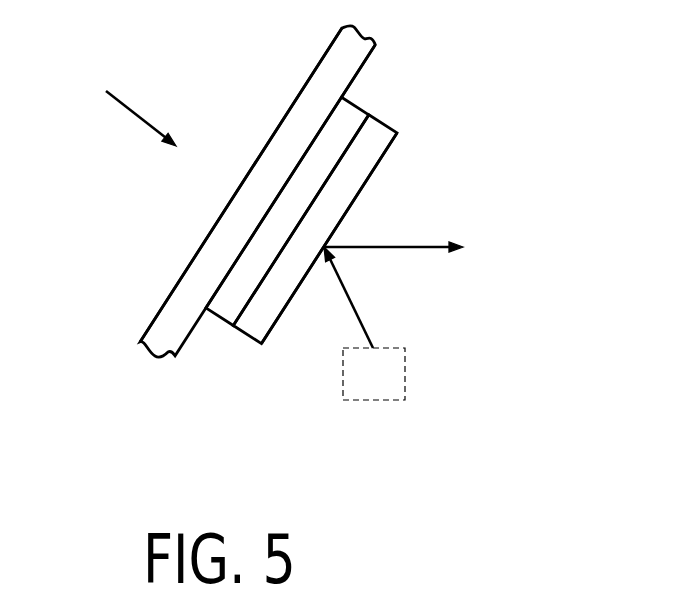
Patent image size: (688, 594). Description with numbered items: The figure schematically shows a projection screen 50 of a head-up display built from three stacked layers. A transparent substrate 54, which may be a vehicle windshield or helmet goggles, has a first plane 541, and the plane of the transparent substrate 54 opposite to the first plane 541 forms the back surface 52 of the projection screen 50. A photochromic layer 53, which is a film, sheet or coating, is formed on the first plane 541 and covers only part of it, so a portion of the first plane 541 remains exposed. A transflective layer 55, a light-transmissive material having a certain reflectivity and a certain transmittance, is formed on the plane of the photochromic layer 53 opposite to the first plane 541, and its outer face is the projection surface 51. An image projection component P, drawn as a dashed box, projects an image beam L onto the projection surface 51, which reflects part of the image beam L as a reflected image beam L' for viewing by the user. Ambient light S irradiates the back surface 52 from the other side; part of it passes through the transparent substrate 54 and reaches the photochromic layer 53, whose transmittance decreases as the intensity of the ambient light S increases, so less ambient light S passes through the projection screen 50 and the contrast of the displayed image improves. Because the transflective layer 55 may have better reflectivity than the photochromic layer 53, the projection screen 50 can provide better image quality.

The projection screen 50 is at (295, 270).
The projection surface 51 is at (328, 296).
The back surface 52 is at (144, 304).
The photochromic layer 53 is at (224, 302).
The transparent substrate 54 is at (166, 339).
The first plane 541 is at (357, 73).
The transflective layer 55 is at (256, 313).
The ambient light S is at (135, 108).
The image beam L is at (377, 297).
The reflected image beam L' is at (401, 215).
The image projection component P is at (370, 383).